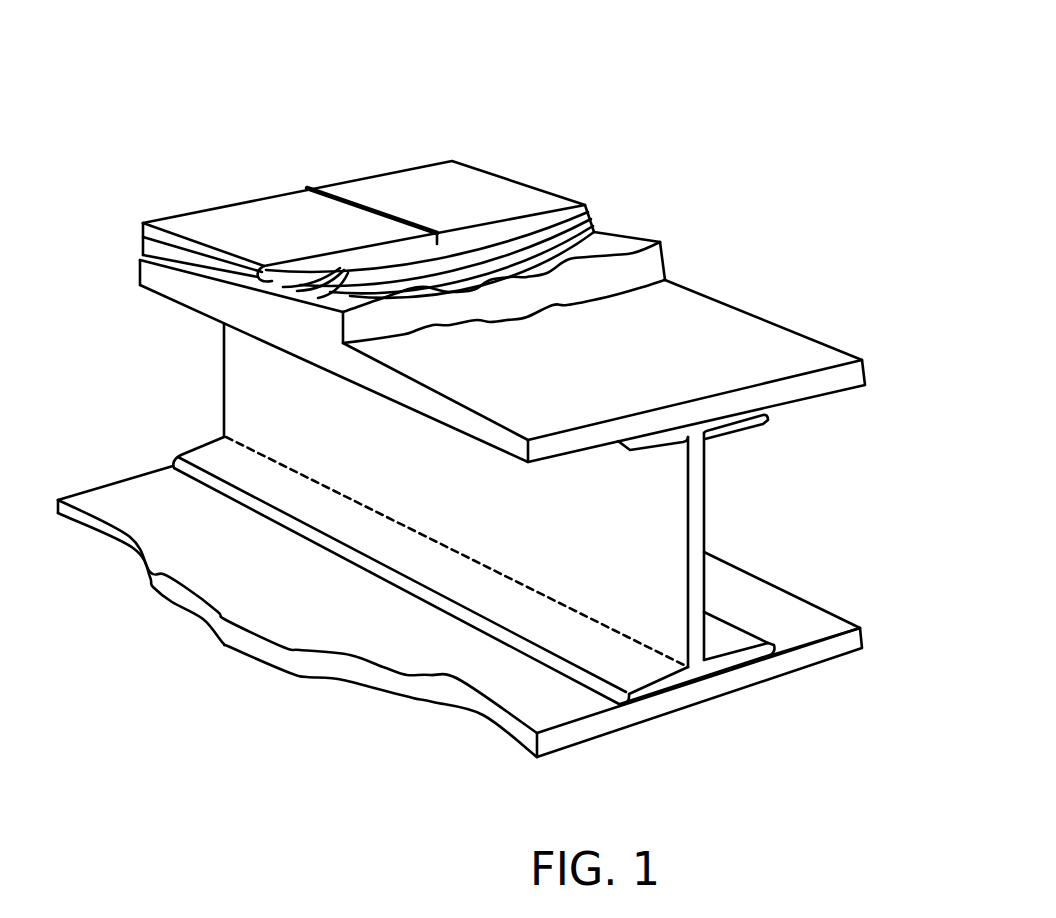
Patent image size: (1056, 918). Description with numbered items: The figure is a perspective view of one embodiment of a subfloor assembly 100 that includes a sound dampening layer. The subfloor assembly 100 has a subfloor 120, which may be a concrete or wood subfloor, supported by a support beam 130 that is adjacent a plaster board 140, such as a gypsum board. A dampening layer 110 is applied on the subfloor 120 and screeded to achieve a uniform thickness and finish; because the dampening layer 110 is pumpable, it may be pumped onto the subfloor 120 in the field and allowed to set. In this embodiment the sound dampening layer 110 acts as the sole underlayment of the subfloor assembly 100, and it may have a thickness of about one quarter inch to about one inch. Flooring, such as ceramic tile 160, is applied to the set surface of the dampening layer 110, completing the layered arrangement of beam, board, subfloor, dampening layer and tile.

The subfloor assembly 100 is at (812, 133).
The dampening layer 110 is at (623, 242).
The subfloor 120 is at (862, 388).
The support beam 130 is at (697, 532).
The plaster board 140 is at (408, 682).
The ceramic tile 160 is at (307, 205).